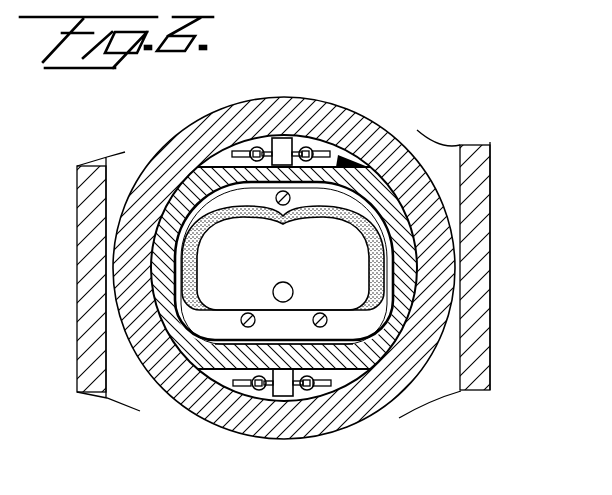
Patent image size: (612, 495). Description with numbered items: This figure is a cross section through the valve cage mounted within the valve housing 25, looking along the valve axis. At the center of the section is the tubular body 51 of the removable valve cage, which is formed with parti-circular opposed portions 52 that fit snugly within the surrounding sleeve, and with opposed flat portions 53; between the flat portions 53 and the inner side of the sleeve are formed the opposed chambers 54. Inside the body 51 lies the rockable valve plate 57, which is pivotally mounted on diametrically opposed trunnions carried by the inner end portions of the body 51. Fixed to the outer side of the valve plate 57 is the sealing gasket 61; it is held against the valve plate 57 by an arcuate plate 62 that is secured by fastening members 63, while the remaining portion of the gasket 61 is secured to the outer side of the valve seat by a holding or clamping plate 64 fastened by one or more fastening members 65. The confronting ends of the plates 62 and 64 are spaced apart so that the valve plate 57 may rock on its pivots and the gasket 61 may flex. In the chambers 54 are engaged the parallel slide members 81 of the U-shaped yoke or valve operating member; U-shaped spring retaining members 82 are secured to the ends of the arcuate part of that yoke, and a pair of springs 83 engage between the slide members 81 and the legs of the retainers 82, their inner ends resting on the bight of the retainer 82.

The valve housing 25 is at (500, 354).
The tubular body 51 is at (369, 372).
The parti-circular opposed portions 52 is at (428, 172).
The opposed flat portions 53 is at (350, 370).
The opposed chambers 54 is at (341, 192).
The rockable valve plate 57 is at (283, 263).
The sealing gasket 61 is at (367, 245).
The arcuate plate 62 is at (227, 322).
The fastening members 63 is at (327, 301).
The clamping plate 64 is at (396, 214).
The fastening members 65 is at (285, 206).
The slide members 81 is at (283, 380).
The spring retaining members 82 is at (241, 395).
The springs 83 is at (290, 423).